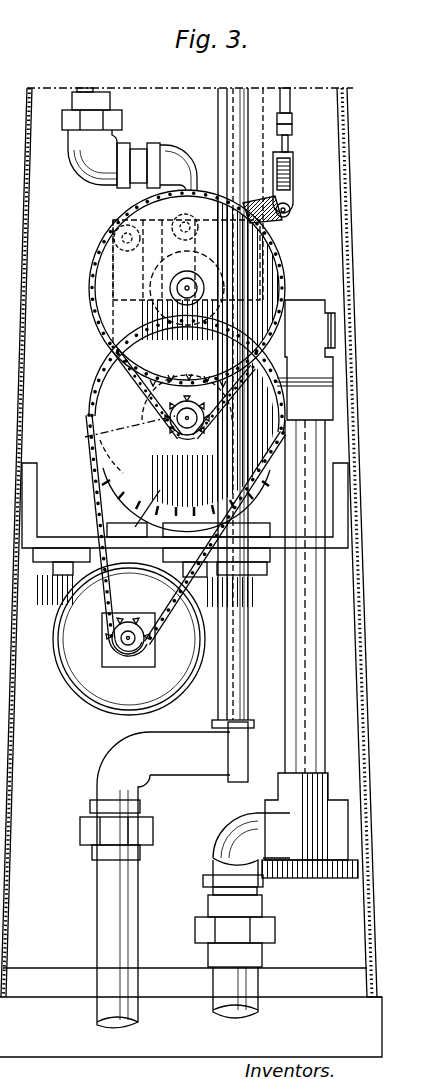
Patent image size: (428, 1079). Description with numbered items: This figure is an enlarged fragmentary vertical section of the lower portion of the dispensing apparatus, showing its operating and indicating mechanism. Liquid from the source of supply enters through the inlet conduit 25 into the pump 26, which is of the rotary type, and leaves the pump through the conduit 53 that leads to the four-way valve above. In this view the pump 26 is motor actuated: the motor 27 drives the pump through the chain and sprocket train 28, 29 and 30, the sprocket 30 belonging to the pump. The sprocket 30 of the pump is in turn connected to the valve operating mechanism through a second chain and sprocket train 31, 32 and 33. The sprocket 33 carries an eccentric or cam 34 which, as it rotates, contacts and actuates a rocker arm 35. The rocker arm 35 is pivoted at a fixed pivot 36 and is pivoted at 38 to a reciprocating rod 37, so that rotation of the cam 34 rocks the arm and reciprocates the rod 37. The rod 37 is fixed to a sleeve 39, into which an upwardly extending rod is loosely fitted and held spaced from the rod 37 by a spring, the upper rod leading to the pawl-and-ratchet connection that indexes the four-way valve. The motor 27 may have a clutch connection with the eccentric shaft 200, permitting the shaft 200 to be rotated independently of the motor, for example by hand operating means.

The conduit 25 is at (250, 1005).
The pump 26 is at (333, 383).
The motor 27 is at (95, 690).
The chain and sprocket train 28 is at (107, 598).
The chain and sprocket train 29 is at (128, 655).
The sprocket 30 is at (108, 407).
The chain and sprocket train 31 is at (85, 437).
The chain and sprocket train 32 is at (183, 405).
The sprocket 33 is at (105, 278).
The eccentric or cam 34 is at (213, 250).
The rocker arm 35 is at (265, 203).
The fixed pivot 36 is at (117, 233).
The reciprocating rod 37 is at (290, 143).
The pivot 38 is at (293, 207).
The sleeve 39 is at (293, 103).
The conduit 53 is at (92, 88).
The eccentric shaft 200 is at (190, 323).